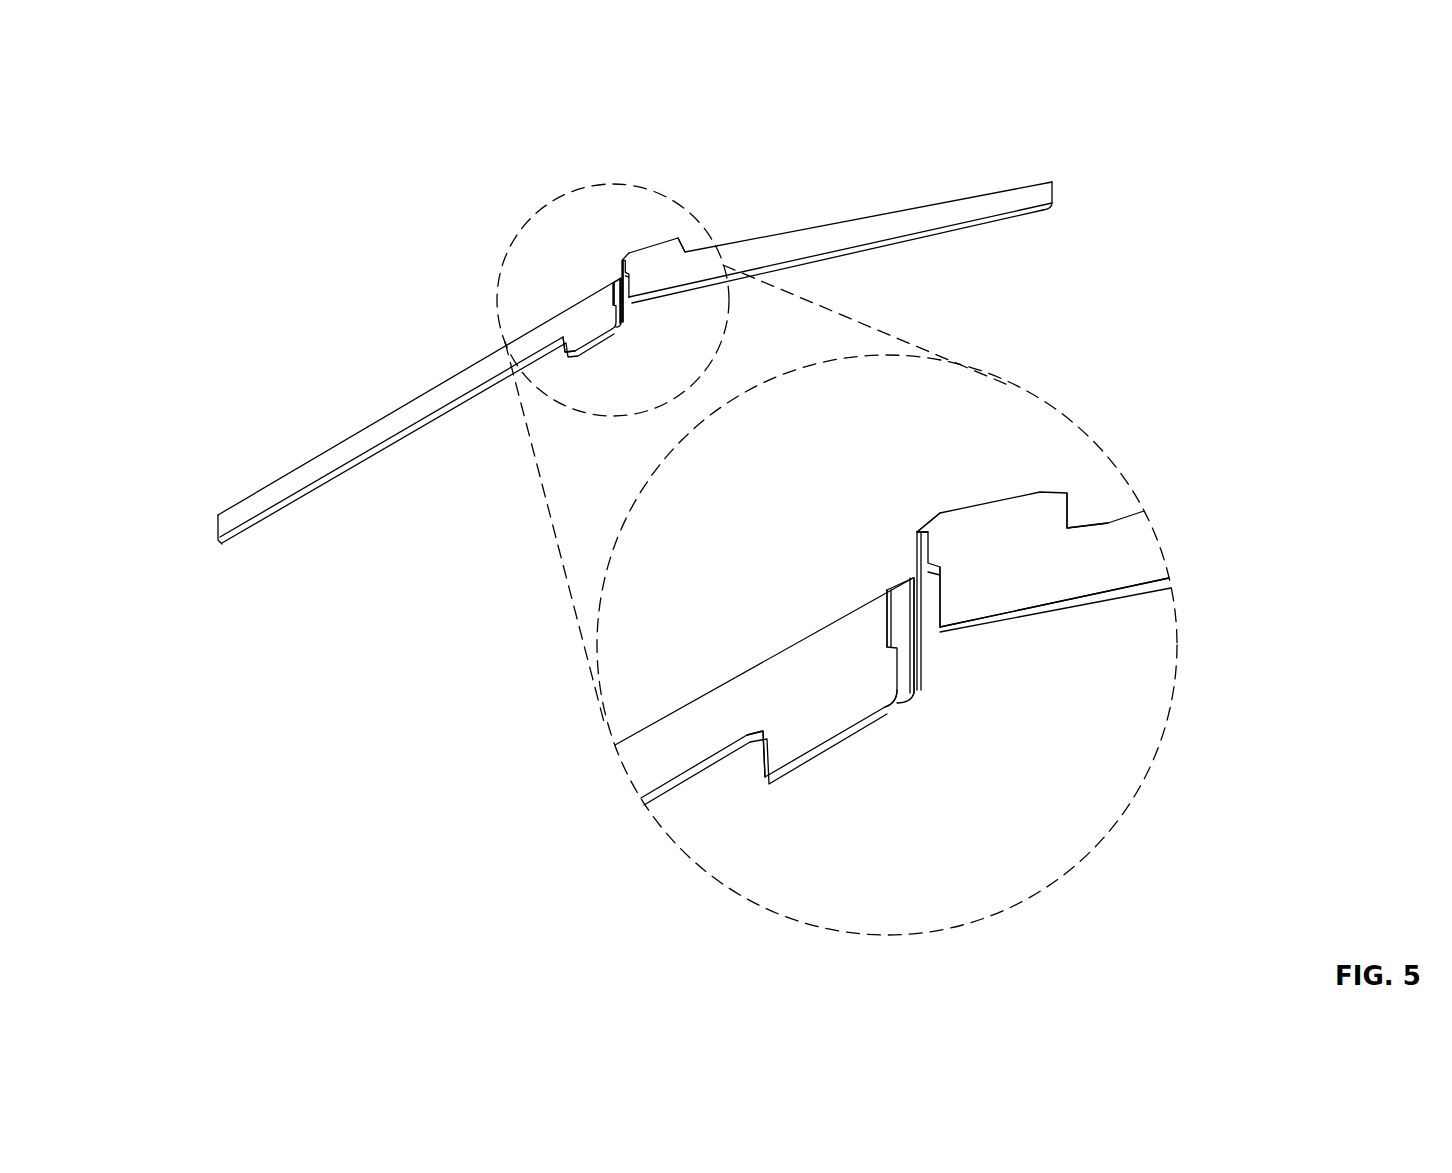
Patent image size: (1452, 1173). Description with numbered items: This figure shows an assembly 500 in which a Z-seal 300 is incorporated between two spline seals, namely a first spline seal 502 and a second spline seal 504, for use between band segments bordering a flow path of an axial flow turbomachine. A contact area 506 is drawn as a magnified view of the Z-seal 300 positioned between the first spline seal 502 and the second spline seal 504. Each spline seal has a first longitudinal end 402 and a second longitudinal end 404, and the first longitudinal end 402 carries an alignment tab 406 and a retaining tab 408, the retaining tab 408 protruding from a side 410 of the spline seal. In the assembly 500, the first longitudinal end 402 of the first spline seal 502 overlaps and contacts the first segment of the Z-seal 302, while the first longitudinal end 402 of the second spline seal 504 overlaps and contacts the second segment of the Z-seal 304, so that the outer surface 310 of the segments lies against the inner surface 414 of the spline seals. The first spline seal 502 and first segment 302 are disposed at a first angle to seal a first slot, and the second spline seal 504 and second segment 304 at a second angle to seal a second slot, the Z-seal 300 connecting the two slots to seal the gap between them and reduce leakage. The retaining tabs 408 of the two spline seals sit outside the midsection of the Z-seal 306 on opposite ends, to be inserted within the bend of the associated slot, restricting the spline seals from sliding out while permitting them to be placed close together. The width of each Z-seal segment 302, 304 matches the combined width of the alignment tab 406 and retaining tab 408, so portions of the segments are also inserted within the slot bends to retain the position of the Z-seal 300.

The assembly 500 is at (1192, 98).
The first spline seal 502 is at (1010, 196).
The second spline seal 504 is at (338, 447).
The contact area 506 is at (640, 190).
The Z-seal 300 is at (791, 481).
The first segment of the Z-seal 302 is at (913, 538).
The second segment of the Z-seal 304 is at (922, 676).
The midsection of the Z-seal 306 is at (912, 580).
The outer surface 310 is at (924, 526).
The first longitudinal end 402 is at (622, 258).
The second longitudinal end 404 is at (213, 532).
The alignment tab 406 is at (887, 603).
The retaining tab 408 is at (930, 540).
The side 410 is at (714, 764).
The inner surface 414 is at (1110, 602).